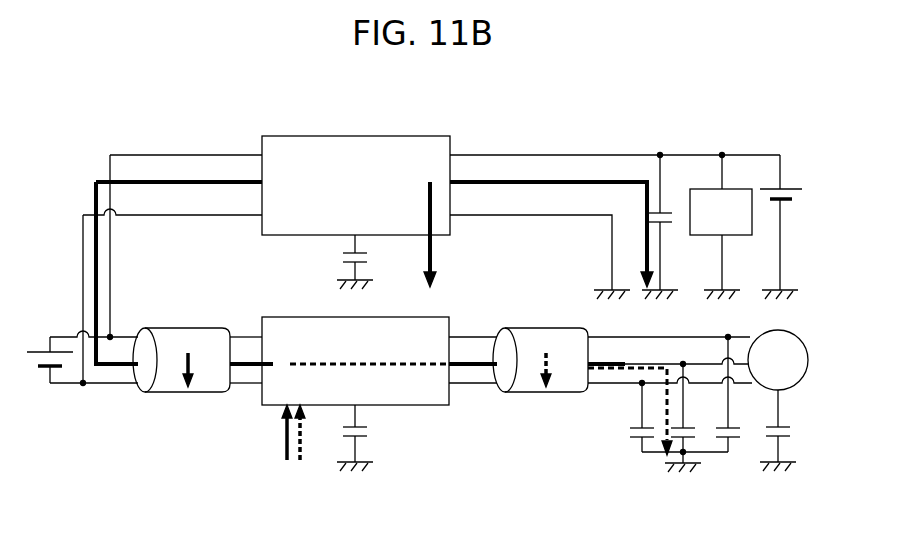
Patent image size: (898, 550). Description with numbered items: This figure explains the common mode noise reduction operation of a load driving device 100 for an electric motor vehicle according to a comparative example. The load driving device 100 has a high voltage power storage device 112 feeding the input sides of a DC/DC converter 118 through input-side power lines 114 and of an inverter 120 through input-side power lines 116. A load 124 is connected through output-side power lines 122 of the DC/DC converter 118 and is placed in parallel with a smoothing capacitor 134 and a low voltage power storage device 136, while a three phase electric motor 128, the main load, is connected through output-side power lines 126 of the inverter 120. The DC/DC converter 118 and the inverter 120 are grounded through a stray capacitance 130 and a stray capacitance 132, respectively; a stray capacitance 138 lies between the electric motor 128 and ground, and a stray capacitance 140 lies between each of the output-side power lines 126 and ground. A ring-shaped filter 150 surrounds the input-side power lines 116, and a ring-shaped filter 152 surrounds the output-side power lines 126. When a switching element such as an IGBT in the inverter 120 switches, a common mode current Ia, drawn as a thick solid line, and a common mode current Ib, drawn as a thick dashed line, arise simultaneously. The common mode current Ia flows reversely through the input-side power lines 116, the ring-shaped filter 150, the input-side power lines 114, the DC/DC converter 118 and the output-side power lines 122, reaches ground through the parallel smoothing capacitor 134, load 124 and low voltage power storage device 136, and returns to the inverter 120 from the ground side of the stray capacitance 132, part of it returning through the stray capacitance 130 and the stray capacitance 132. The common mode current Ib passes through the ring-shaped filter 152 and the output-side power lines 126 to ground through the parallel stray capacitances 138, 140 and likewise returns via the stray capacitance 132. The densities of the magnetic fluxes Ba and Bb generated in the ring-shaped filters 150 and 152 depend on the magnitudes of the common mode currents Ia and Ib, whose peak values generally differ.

The load driving device 100 is at (493, 89).
The high voltage power storage device 112 is at (36, 358).
The input-side power lines 114 is at (148, 225).
The input-side power lines 116 is at (244, 328).
The DC/DC converter 118 is at (350, 136).
The inverter 120 is at (273, 317).
The output-side power lines 122 is at (513, 225).
The load 124 is at (736, 236).
The output-side power lines 126 is at (608, 328).
The three phase electric motor 128 is at (786, 332).
The stray capacitance 130 is at (343, 259).
The stray capacitance 132 is at (367, 434).
The smoothing capacitor 134 is at (672, 215).
The low voltage power storage device 136 is at (796, 196).
The stray capacitance 138 is at (791, 433).
The stray capacitance 140 is at (632, 430).
The ring-shaped filter 150 is at (170, 327).
The ring-shaped filter 152 is at (534, 328).
The common mode current Ia is at (115, 365).
The common mode current Ib is at (301, 465).
The magnetic flux Ba is at (183, 368).
The magnetic flux Bb is at (538, 368).